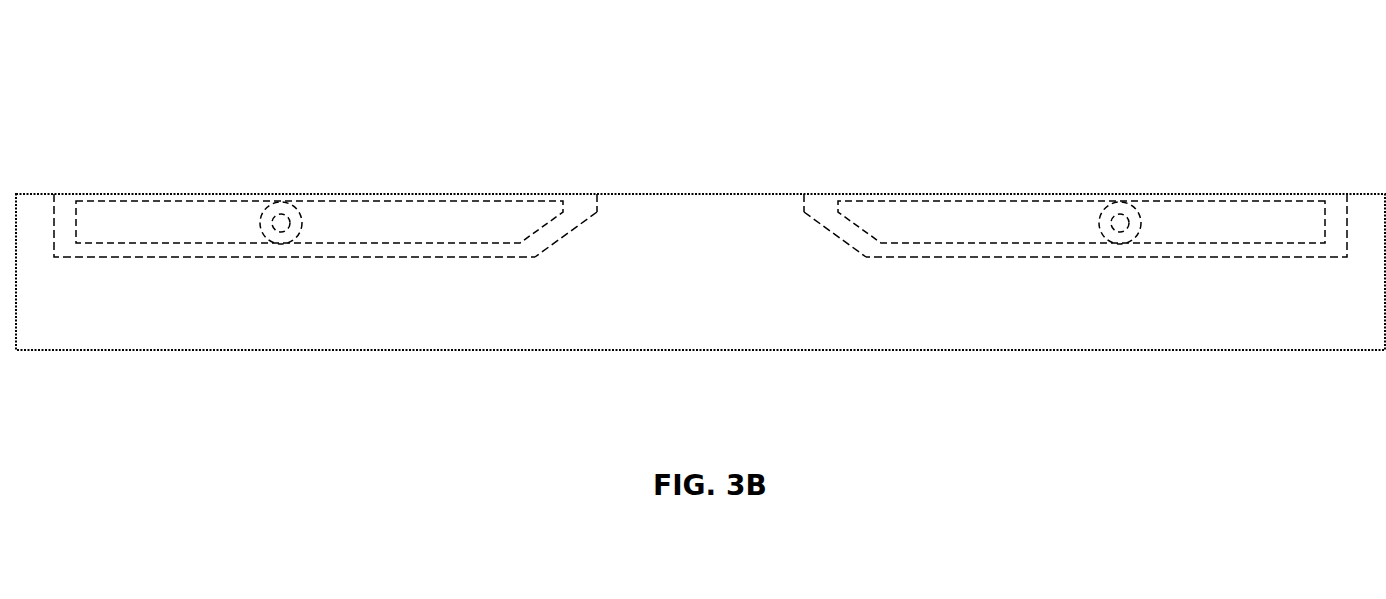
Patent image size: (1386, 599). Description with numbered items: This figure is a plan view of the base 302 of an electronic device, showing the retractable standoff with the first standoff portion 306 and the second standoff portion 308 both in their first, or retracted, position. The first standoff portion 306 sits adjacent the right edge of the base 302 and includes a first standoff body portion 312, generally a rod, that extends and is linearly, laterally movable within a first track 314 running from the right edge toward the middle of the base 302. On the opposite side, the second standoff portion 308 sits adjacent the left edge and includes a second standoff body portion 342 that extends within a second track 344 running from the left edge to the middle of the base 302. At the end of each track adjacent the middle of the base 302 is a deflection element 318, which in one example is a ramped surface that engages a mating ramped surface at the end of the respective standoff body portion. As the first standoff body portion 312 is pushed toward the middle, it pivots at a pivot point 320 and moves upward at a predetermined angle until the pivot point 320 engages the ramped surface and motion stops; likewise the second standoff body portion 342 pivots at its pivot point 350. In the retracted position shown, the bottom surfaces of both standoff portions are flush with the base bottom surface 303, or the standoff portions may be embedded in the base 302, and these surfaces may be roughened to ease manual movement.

The base 302 is at (803, 86).
The base bottom surface 303 is at (702, 193).
The first standoff portion 306 is at (319, 188).
The second standoff portion 308 is at (1081, 189).
The first standoff body portion 312 is at (380, 222).
The first track 314 is at (106, 258).
The deflection element 318 is at (566, 238).
The pivot point 320 is at (281, 205).
The second standoff body portion 342 is at (1040, 222).
The second track 344 is at (1283, 258).
The pivot point 350 is at (1121, 205).